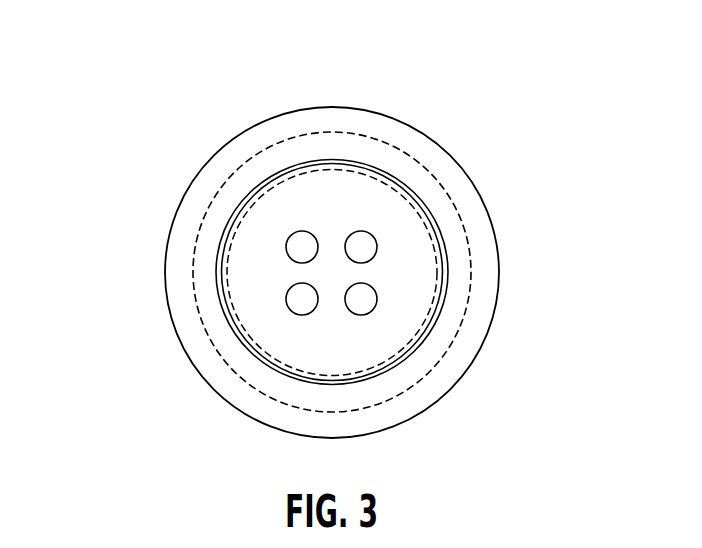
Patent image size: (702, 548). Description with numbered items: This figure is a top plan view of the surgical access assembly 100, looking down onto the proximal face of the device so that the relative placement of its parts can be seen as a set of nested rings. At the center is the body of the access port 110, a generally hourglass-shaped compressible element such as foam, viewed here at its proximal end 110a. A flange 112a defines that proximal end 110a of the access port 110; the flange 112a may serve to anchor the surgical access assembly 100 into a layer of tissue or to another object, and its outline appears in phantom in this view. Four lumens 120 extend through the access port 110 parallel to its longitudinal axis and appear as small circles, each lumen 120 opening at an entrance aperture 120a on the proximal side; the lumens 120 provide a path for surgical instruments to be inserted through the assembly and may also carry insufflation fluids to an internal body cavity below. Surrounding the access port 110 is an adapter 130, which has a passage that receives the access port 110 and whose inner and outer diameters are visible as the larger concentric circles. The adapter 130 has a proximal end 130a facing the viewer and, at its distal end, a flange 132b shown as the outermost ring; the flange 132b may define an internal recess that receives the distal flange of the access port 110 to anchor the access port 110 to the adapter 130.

The surgical access assembly 100 is at (126, 36).
The access port 110 is at (227, 268).
The proximal end 110a is at (255, 245).
The flange 112a is at (222, 302).
The lumen 120 is at (362, 299).
The entrance aperture 120a is at (378, 247).
The adapter 130 is at (192, 287).
The proximal end 130a is at (232, 360).
The flange 132b is at (432, 407).